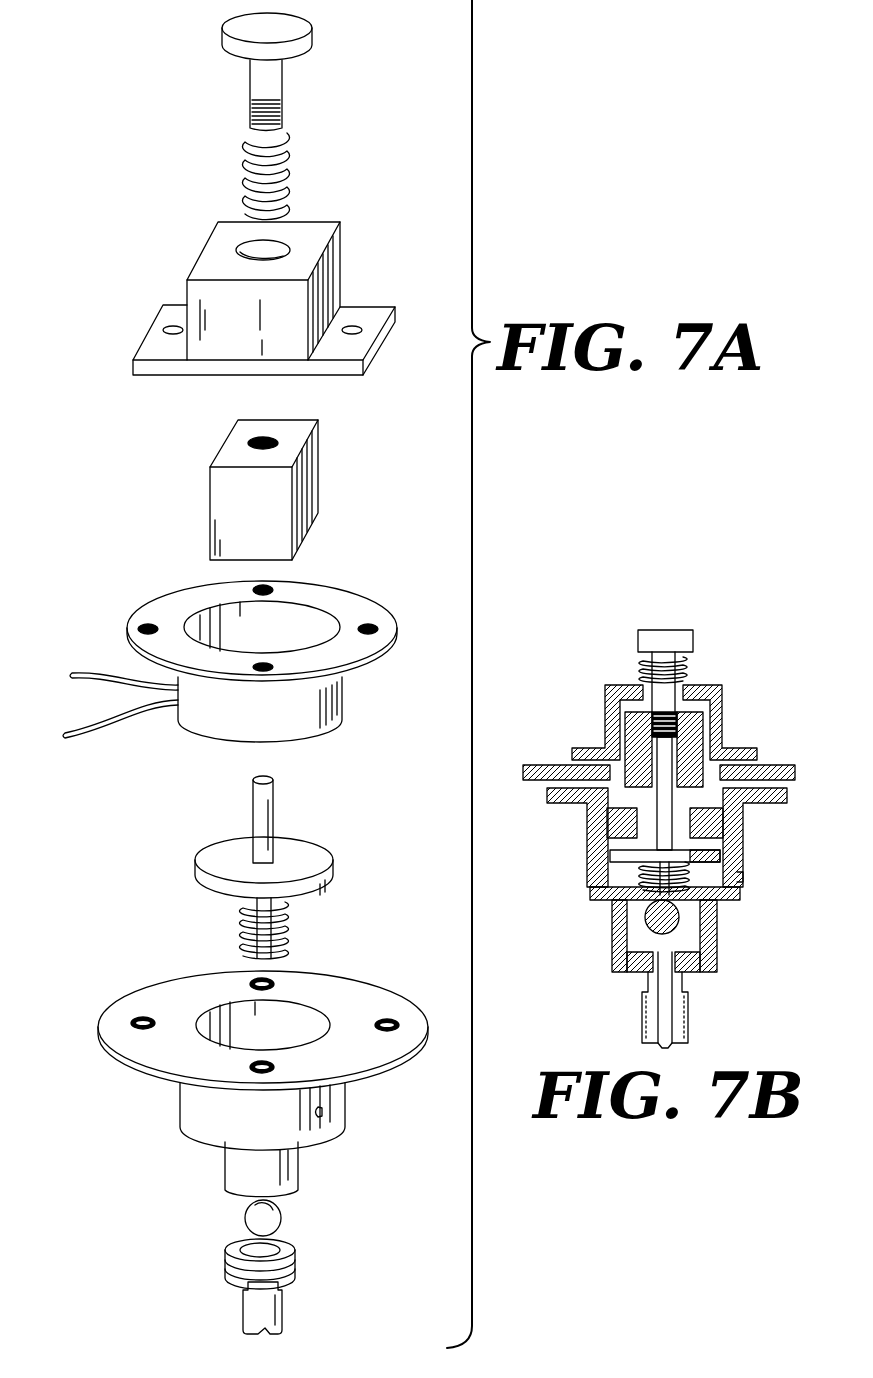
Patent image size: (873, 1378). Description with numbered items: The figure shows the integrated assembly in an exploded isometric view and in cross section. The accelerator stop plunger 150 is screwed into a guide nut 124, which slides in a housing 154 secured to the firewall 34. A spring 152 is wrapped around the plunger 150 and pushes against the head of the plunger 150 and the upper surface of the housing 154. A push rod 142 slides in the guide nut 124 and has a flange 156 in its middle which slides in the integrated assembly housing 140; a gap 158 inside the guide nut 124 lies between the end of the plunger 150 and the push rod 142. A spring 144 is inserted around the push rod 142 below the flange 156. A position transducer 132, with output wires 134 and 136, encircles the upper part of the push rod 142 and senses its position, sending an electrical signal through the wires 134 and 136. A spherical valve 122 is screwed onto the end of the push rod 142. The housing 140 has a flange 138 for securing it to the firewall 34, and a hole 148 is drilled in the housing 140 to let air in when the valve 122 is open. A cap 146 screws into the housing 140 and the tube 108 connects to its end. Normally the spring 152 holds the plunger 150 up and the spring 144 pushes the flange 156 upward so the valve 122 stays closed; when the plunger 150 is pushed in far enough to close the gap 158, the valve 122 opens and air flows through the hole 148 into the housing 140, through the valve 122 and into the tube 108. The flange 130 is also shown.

In FIG. 7B, the firewall 34 is at (783, 767).
In FIG. 7A, the tube 108 is at (247, 1308).
In FIG. 7B, the tube 108 is at (690, 1033).
In FIG. 7A, the spherical valve 122 is at (248, 1213).
In FIG. 7B, the spherical valve 122 is at (646, 926).
In FIG. 7A, the guide nut 124 is at (305, 470).
In FIG. 7B, the guide nut 124 is at (707, 727).
In FIG. 7A, the upper flange 130 is at (325, 598).
In FIG. 7A, the position transducer 132 is at (202, 715).
In FIG. 7B, the position transducer 132 is at (744, 823).
In FIG. 7A, the output wire 134 is at (78, 668).
In FIG. 7A, the output wire 136 is at (78, 727).
In FIG. 7A, the flange 138 is at (130, 1010).
In FIG. 7B, the flange 138 is at (738, 840).
In FIG. 7A, the integrated assembly housing 140 is at (193, 1105).
In FIG. 7B, the integrated assembly housing 140 is at (590, 898).
In FIG. 7A, the push rod 142 is at (257, 805).
In FIG. 7B, the push rod 142 is at (662, 838).
In FIG. 7A, the spring 144 is at (245, 923).
In FIG. 7B, the spring 144 is at (688, 881).
In FIG. 7A, the cap 146 is at (225, 1262).
In FIG. 7B, the cap 146 is at (697, 967).
In FIG. 7A, the hole 148 is at (348, 1102).
In FIG. 7B, the hole 148 is at (741, 877).
In FIG. 7A, the accelerator stop plunger 150 is at (312, 40).
In FIG. 7B, the accelerator stop plunger 150 is at (693, 637).
In FIG. 7A, the spring 152 is at (288, 157).
In FIG. 7B, the spring 152 is at (685, 672).
In FIG. 7A, the housing 154 is at (327, 262).
In FIG. 7B, the housing 154 is at (722, 697).
In FIG. 7A, the flange 156 is at (217, 852).
In FIG. 7B, the flange 156 is at (740, 855).
In FIG. 7B, the gap 158 is at (624, 750).